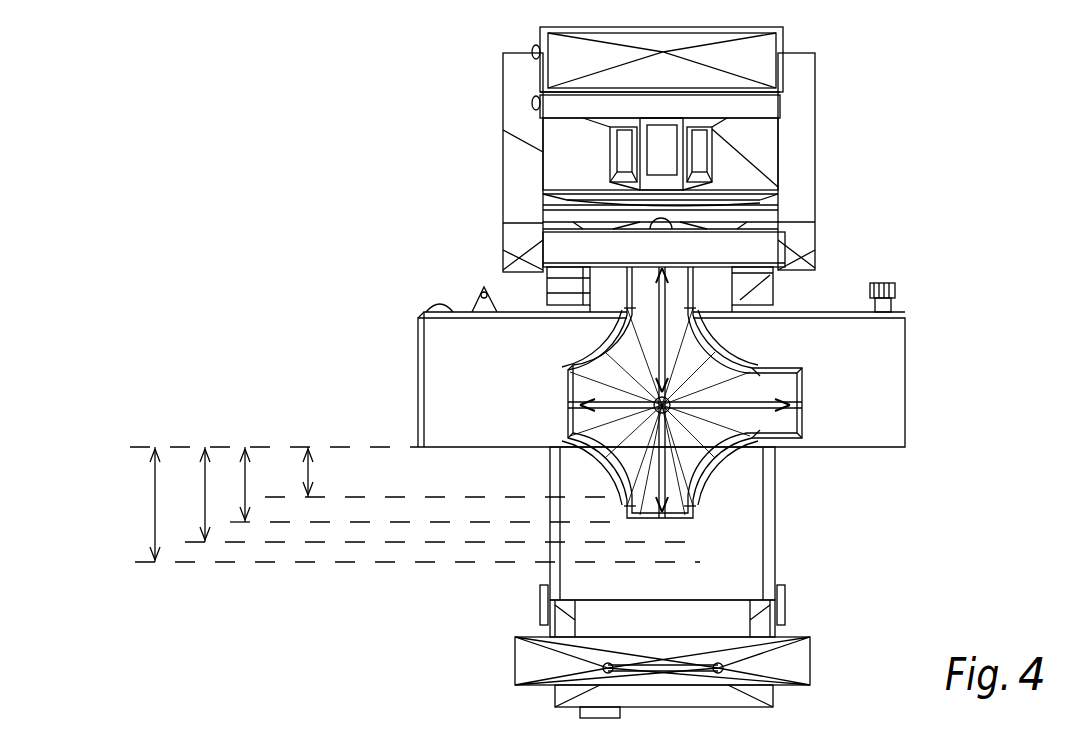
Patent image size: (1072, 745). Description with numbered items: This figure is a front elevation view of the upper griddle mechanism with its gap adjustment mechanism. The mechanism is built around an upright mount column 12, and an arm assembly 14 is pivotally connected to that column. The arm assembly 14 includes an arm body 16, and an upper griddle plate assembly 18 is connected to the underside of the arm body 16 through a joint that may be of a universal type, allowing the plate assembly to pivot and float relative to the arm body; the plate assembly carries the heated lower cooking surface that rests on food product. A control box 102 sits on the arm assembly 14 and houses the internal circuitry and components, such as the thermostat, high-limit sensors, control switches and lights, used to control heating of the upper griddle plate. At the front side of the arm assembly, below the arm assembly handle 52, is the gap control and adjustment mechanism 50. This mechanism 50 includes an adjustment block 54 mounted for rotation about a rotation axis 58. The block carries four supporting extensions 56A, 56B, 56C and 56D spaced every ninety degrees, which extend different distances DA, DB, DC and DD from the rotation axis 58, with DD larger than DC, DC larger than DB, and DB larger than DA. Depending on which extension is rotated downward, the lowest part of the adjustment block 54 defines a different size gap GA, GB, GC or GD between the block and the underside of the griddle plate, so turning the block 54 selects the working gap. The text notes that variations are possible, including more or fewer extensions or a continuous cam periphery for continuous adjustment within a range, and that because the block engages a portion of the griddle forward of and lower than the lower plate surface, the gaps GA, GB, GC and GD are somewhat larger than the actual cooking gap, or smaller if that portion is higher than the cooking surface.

The control box 102 is at (750, 55).
The arm assembly 14 is at (820, 152).
The arm body 16 is at (800, 190).
The arm assembly handle 52 is at (745, 250).
The upper griddle plate assembly 18 is at (897, 375).
The adjustment block 54 is at (698, 383).
The rotation axis 58 is at (622, 453).
The supporting extension 56A is at (582, 425).
The supporting extension 56B is at (635, 498).
The supporting extension 56C is at (770, 422).
The supporting extension 56D is at (637, 300).
The gap control and adjustment mechanism 50 is at (822, 433).
The upright mount column 12 is at (755, 548).
The extension distance DA is at (613, 360).
The extension distance DB is at (663, 450).
The extension distance DC is at (737, 402).
The extension distance DD is at (627, 318).
The gap GA is at (308, 470).
The gap GB is at (245, 478).
The gap GC is at (207, 497).
The gap GD is at (157, 487).